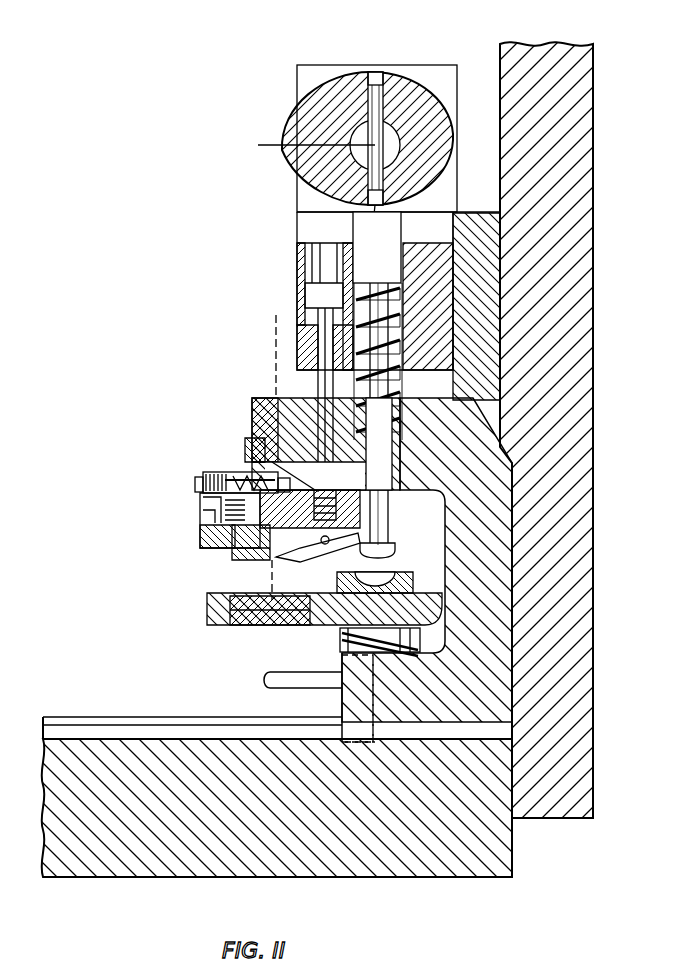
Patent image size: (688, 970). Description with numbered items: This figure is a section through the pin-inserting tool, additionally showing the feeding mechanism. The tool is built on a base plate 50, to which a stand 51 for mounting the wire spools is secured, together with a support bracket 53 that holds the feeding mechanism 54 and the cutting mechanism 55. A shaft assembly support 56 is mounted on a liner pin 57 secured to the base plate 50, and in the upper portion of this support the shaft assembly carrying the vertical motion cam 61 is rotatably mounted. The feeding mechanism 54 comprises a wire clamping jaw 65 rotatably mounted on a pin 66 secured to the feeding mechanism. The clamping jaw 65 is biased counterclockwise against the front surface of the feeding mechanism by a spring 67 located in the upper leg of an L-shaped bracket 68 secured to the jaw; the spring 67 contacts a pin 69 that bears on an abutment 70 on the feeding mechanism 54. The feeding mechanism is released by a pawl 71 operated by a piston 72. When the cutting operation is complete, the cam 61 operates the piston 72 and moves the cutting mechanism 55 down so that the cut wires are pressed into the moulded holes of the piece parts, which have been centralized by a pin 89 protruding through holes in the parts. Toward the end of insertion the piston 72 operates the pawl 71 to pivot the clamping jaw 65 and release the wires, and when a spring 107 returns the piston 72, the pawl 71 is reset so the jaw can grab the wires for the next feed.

The base plate 50 is at (513, 858).
The stand 51 is at (586, 399).
The support bracket 53 is at (504, 562).
The feeding mechanism 54 is at (408, 538).
The cutting mechanism 55 is at (327, 629).
The shaft assembly support 56 is at (296, 240).
The liner pin 57 is at (342, 690).
The vertical motion cam 61 is at (335, 82).
The wire clamping jaw 65 is at (232, 553).
The pin 66 is at (200, 490).
The spring 67 is at (233, 476).
The L-shaped bracket 68 is at (206, 532).
The pin 69 is at (268, 452).
The abutment 70 is at (291, 482).
The pawl 71 is at (296, 558).
The piston 72 is at (386, 240).
The pin 89 is at (262, 680).
The spring 107 is at (393, 372).